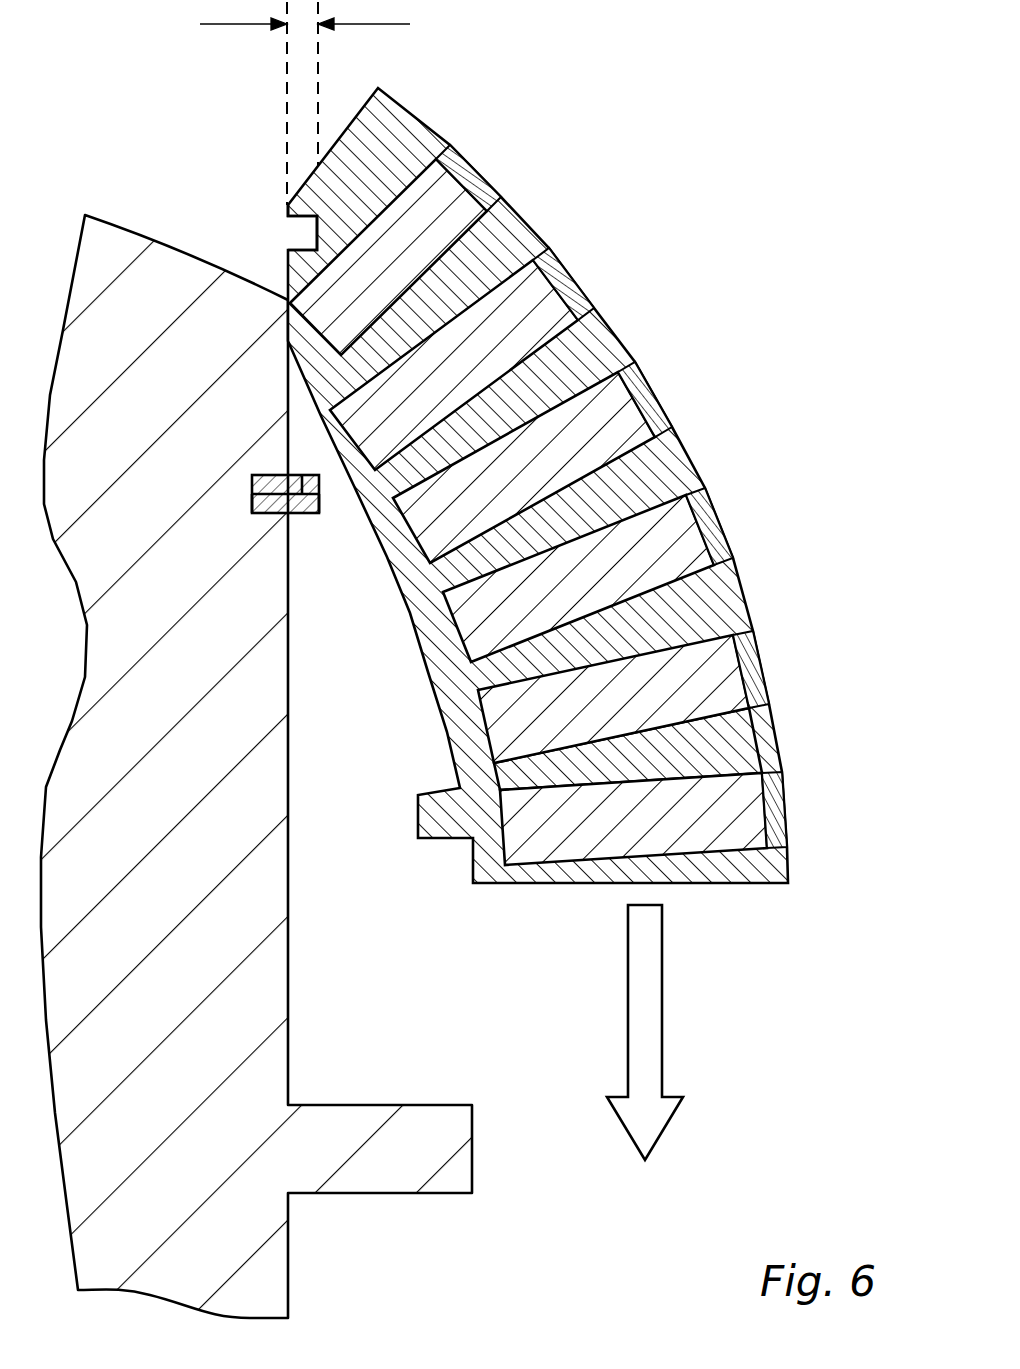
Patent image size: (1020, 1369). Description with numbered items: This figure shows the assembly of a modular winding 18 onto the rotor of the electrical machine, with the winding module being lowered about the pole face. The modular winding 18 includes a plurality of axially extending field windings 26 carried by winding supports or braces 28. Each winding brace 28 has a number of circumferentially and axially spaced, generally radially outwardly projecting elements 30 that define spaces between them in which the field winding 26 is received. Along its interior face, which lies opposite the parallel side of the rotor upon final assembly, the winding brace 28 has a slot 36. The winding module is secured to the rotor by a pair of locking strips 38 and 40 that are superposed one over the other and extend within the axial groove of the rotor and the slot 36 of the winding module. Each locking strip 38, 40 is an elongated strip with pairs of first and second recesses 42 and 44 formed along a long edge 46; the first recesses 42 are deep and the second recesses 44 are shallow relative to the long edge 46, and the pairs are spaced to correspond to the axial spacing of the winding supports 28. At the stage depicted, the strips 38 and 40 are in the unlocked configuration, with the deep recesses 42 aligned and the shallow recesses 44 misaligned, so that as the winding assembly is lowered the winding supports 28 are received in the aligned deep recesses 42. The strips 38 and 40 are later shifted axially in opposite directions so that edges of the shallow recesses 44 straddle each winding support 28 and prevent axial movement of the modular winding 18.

The modular winding 18 is at (588, 421).
The field winding 26 is at (652, 547).
The winding brace 28 is at (436, 618).
The radially outwardly projecting element 30 is at (728, 748).
The slot 36 is at (290, 222).
The locking strip 38 is at (268, 478).
The locking strip 40 is at (268, 514).
The first recess 42 is at (292, 482).
The second recess 44 is at (306, 484).
The long edge 46 is at (328, 506).